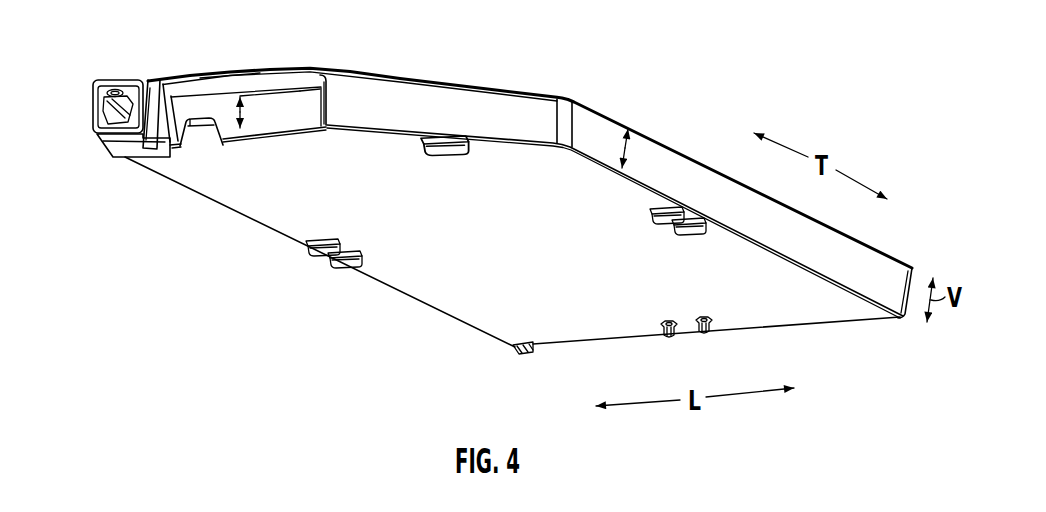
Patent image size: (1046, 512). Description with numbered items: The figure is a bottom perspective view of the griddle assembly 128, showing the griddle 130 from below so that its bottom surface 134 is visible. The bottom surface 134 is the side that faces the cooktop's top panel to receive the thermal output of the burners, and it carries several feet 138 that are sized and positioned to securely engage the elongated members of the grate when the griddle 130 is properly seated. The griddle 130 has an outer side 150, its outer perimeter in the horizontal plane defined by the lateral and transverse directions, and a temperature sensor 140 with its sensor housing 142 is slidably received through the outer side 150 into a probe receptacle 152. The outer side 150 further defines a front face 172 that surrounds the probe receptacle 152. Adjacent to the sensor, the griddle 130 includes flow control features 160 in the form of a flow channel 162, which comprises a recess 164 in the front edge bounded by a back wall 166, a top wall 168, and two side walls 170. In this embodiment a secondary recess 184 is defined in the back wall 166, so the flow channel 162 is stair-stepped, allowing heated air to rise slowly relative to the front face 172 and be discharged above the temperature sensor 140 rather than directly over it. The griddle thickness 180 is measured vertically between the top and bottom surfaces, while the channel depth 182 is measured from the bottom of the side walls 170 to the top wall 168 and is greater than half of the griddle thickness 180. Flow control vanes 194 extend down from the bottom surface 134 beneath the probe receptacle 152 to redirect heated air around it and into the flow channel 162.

The griddle assembly 128 is at (612, 45).
The griddle 130 is at (542, 254).
The bottom surface 134 is at (500, 301).
The feet 138 is at (461, 153).
The temperature sensor 140 is at (93, 110).
The sensor housing 142 is at (136, 99).
The outer side 150 is at (388, 105).
The probe receptacle 152 is at (110, 132).
The flow control features 160 is at (250, 148).
The flow channel 162 is at (260, 106).
The recess 164 is at (303, 100).
The back wall 166 is at (293, 118).
The top wall 168 is at (222, 74).
The side walls 170 is at (168, 108).
The front face 172 is at (152, 99).
The griddle thickness 180 is at (628, 148).
The channel depth 182 is at (246, 120).
The secondary recess 184 is at (200, 144).
The flow control vanes 194 is at (123, 150).